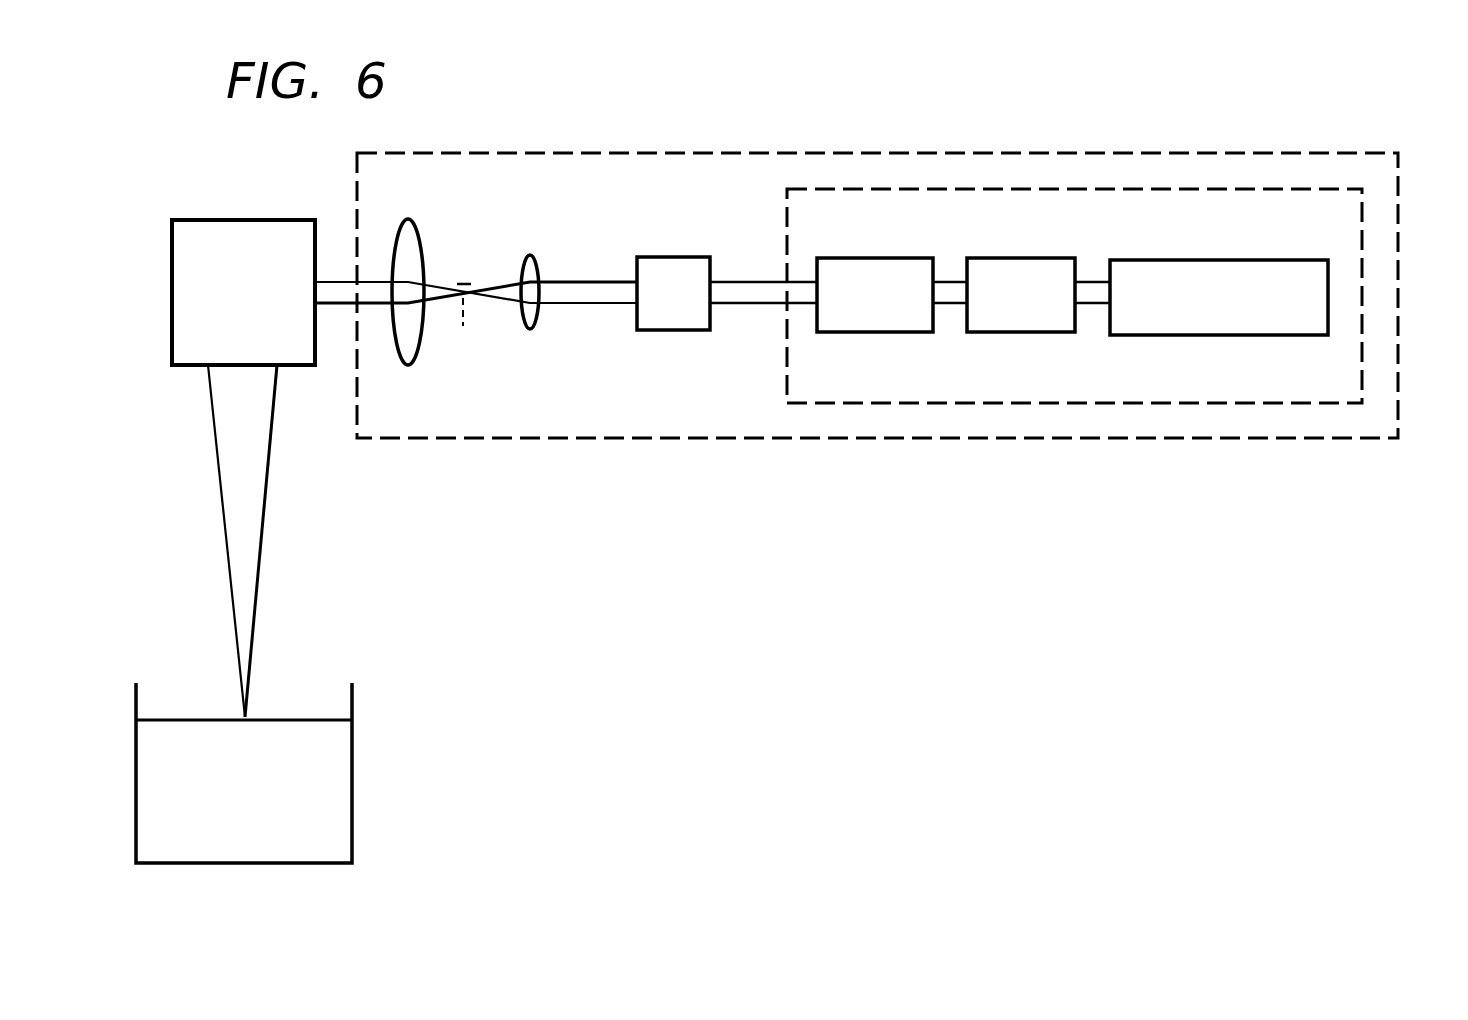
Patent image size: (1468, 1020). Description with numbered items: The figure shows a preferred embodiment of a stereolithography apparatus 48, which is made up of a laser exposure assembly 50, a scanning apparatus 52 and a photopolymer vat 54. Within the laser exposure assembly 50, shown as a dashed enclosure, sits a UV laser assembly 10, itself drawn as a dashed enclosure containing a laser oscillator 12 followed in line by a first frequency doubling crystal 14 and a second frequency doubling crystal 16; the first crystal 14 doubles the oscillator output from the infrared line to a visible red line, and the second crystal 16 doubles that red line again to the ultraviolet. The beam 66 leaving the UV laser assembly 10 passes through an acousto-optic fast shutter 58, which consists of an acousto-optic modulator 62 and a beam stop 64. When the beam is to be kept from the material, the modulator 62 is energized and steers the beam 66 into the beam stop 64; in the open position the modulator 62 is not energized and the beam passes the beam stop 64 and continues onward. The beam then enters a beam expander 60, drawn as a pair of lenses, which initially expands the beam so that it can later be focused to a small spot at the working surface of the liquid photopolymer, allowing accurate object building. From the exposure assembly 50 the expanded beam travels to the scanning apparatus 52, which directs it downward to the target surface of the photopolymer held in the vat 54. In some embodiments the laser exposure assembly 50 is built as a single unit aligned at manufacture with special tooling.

The UV laser assembly 10 is at (1310, 218).
The laser oscillator 12 is at (1218, 259).
The first frequency doubling crystal 14 is at (1020, 257).
The second frequency doubling crystal 16 is at (870, 257).
The stereolithography apparatus 48 is at (988, 543).
The laser exposure assembly 50 is at (879, 438).
The scanning apparatus 52 is at (243, 242).
The photopolymer vat 54 is at (328, 798).
The acousto-optic fast shutter 58 is at (642, 340).
The beam expander 60 is at (530, 255).
The acousto-optic modulator 62 is at (670, 252).
The beam stop 64 is at (463, 322).
The beam 66 is at (557, 281).